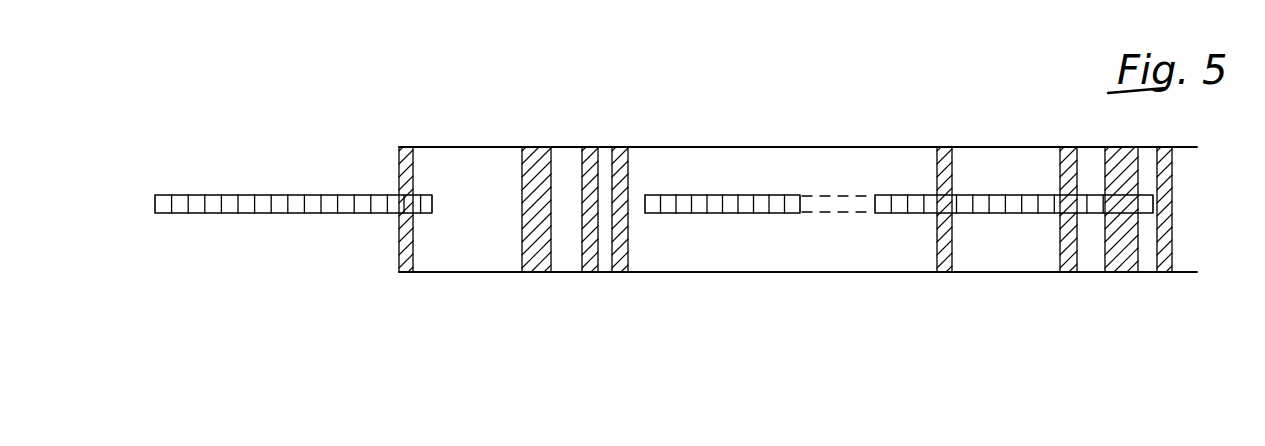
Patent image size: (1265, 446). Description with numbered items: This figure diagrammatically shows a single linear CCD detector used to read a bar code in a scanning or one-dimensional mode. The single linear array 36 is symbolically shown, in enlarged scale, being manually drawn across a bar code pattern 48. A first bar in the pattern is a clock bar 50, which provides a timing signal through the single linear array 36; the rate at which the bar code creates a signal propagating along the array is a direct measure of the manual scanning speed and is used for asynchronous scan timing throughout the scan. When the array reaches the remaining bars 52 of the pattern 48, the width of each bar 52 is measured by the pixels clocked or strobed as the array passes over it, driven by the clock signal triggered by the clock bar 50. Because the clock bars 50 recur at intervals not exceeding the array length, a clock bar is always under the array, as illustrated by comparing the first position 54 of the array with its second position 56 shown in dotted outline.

The single linear array 36 is at (654, 190).
The bar code pattern 48 is at (452, 104).
The clock bar 50 is at (405, 274).
The remaining bars 52 is at (537, 152).
The first position 54 is at (293, 249).
The second position 56 is at (776, 217).